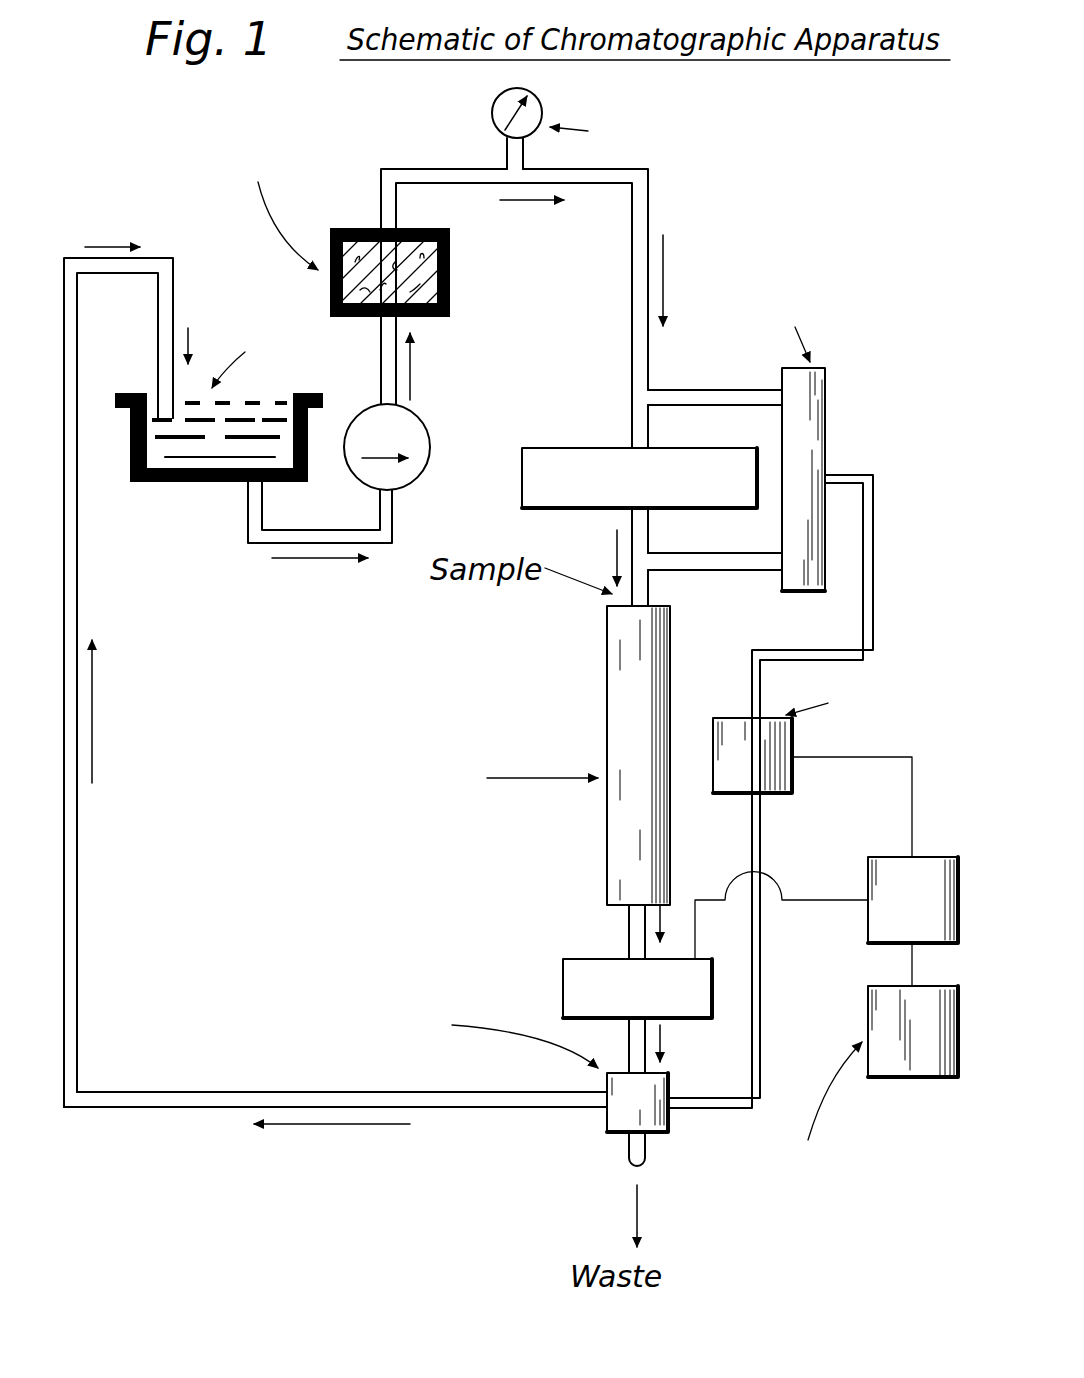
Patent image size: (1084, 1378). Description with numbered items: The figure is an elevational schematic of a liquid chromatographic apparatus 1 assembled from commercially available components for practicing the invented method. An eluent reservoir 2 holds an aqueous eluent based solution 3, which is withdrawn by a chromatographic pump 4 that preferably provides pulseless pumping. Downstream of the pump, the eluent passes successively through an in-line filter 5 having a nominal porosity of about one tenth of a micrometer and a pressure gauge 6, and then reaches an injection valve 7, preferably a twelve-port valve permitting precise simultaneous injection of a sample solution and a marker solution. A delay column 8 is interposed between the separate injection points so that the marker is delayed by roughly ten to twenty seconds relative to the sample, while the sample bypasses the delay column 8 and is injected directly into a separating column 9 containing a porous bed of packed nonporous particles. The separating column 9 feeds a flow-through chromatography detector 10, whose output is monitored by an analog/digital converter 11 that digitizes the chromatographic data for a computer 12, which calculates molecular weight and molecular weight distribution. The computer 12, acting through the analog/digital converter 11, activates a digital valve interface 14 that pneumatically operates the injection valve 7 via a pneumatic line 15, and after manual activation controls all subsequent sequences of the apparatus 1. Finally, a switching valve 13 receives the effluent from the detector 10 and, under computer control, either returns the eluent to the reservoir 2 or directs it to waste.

The chromatographic apparatus 1 is at (818, 210).
The eluent reservoir 2 is at (195, 483).
The aqueous eluent based solution 3 is at (258, 402).
The chromatographic pump 4 is at (430, 455).
The in-line filter 5 is at (450, 270).
The pressure gauge 6 is at (492, 112).
The injection valve 7 is at (826, 398).
The delay column 8 is at (588, 448).
The separating column 9 is at (607, 695).
The chromatography detector 10 is at (578, 959).
The analog/digital converter 11 is at (885, 857).
The computer 12 is at (868, 1000).
The switching valve 13 is at (605, 1118).
The digital valve interface 14 is at (728, 718).
The pneumatic line 15 is at (873, 565).